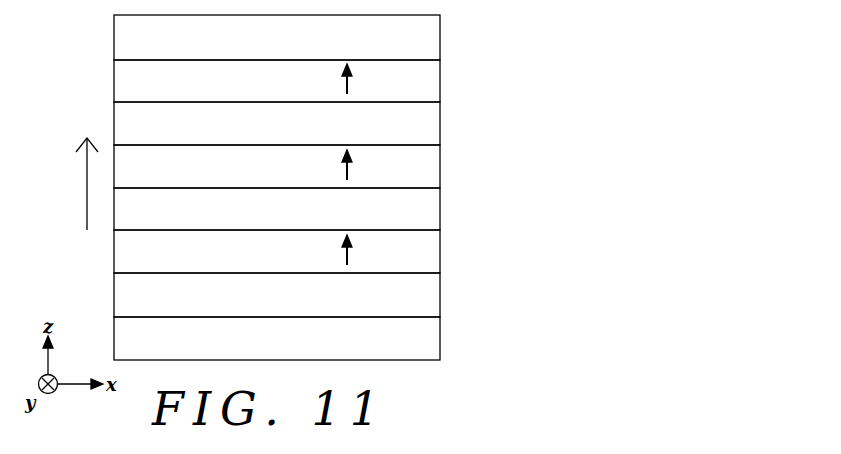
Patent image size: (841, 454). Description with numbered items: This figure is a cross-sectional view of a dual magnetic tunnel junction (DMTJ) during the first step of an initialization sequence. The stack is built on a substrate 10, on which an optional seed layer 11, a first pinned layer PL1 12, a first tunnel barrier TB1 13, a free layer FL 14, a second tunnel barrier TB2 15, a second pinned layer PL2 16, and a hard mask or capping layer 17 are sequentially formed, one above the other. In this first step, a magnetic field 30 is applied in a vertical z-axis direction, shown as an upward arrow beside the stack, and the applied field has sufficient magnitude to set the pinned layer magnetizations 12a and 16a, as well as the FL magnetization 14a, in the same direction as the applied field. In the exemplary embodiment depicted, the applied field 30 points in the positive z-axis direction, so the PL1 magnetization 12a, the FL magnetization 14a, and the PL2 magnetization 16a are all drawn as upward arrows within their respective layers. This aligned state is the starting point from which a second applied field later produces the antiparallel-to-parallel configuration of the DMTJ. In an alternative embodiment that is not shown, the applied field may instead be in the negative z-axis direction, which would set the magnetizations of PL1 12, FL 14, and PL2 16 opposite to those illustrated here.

The substrate 10 is at (427, 339).
The seed layer 11 is at (427, 296).
The PL1 12 is at (427, 252).
The pinned layer magnetization 12a is at (365, 252).
The TB1 13 is at (427, 210).
The FL 14 is at (427, 167).
The FL magnetization 14a is at (365, 166).
The TB2 15 is at (427, 124).
The PL2 16 is at (427, 81).
The pinned layer magnetization 16a is at (365, 81).
The capping layer 17 is at (427, 41).
The magnetic field 30 is at (78, 184).